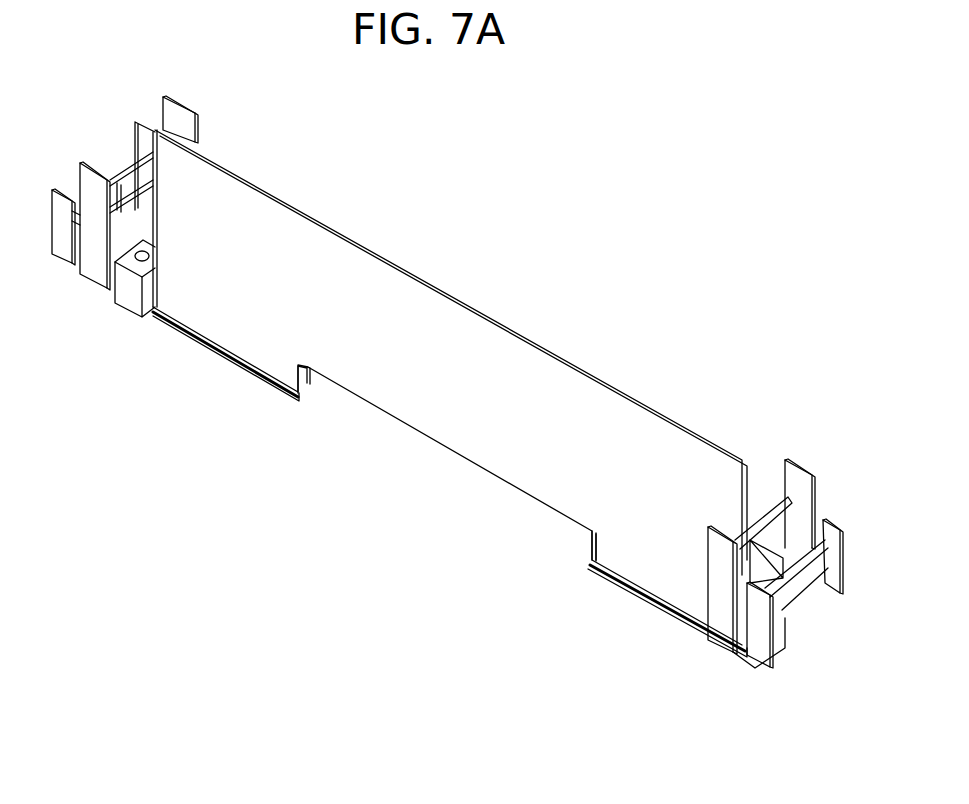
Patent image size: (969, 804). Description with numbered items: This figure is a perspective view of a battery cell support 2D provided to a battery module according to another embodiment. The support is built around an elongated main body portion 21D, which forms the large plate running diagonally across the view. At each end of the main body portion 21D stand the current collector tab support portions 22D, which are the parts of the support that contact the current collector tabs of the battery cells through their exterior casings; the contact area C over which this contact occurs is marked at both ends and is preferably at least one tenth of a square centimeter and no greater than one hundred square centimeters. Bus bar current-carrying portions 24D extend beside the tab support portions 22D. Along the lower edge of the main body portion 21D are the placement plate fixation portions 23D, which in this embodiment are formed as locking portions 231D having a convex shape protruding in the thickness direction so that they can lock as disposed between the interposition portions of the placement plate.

The battery cell support 2D is at (85, 121).
The main body portion 21D is at (242, 205).
The current collector tab support portion 22D is at (778, 528).
The placement plate fixation portion 23D is at (296, 408).
The locking portion 231D is at (300, 403).
The bus bar current-carrying portion 24D is at (806, 578).
The contact area C is at (90, 235).